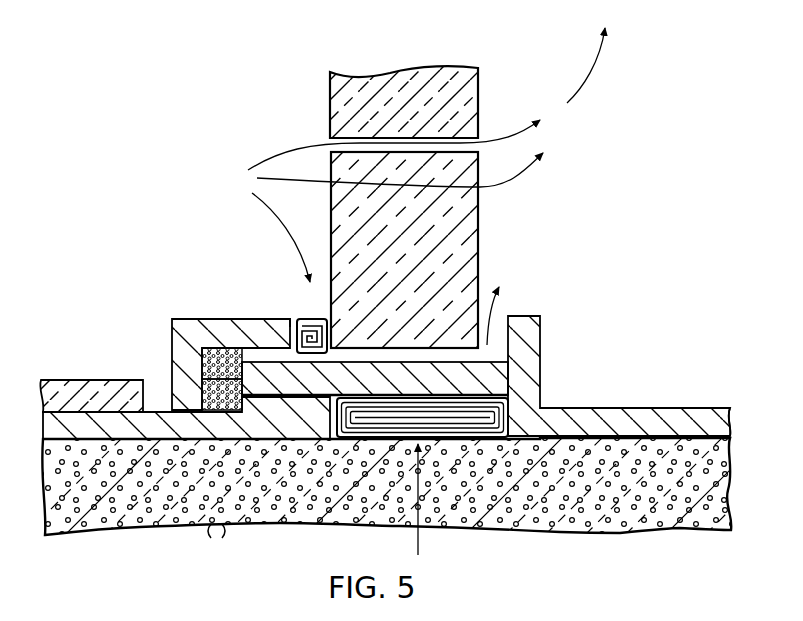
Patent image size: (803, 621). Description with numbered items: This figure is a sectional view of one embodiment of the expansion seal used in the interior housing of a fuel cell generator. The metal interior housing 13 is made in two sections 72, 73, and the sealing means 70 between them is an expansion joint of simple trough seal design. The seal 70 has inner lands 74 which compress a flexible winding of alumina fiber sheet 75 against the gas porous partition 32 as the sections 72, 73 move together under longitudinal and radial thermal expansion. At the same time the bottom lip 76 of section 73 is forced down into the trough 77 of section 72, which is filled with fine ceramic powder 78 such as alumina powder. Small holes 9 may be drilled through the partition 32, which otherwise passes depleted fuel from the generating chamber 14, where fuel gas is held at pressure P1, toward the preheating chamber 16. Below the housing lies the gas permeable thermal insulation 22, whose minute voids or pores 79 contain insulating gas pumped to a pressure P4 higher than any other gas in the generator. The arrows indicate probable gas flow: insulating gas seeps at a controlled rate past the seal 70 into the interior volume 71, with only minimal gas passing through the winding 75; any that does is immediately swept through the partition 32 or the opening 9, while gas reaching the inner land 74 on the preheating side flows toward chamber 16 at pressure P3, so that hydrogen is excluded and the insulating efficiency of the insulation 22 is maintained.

The small holes 9 is at (330, 138).
The interior housing 13 is at (199, 320).
The fuel gas inlet or electrical energy generating chamber 14 is at (207, 121).
The combustion product or preheating chamber 16 is at (608, 137).
The gas permeable thermal insulation 22 is at (85, 530).
The gas porous partition 32 is at (392, 76).
The seal 70 is at (502, 325).
The interior volume 71 is at (276, 115).
The section 72 is at (52, 430).
The section 73 is at (712, 412).
The inner lands 74 is at (290, 318).
The flexible winding of alumina fiber sheet 75 is at (310, 319).
The bottom lip 76 is at (318, 388).
The trough 77 is at (201, 382).
The fine ceramic powder 78 is at (201, 356).
The minute voids or pores 79 is at (244, 527).
The fuel gas pressure P1 is at (382, 201).
The gas pressure P3 is at (602, 65).
The insulating gas pressure P4 is at (440, 500).